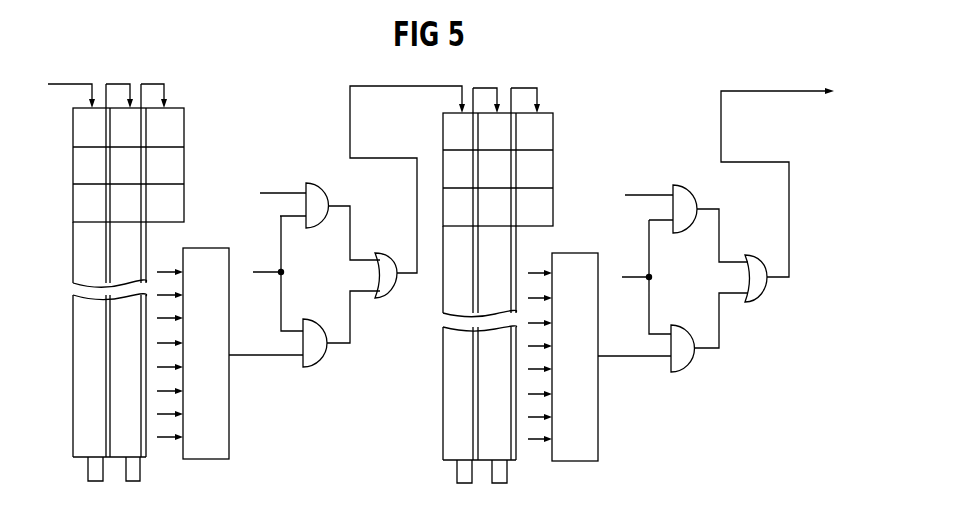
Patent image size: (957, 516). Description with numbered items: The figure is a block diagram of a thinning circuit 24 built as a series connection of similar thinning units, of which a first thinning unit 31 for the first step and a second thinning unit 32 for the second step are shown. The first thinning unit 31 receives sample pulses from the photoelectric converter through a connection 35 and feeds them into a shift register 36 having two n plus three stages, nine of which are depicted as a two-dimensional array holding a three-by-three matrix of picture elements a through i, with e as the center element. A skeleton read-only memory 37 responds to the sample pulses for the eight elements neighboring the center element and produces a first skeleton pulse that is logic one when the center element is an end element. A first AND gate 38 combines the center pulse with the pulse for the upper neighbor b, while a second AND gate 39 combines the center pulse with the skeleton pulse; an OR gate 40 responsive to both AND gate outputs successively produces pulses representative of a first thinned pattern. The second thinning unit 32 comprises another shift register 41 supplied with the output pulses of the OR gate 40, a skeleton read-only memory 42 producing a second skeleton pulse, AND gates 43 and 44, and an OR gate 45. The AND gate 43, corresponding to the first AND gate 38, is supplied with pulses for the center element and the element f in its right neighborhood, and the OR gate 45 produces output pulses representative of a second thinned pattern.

The thinning circuit 24 is at (746, 390).
The first thinning unit 31 is at (248, 125).
The second thinning unit 32 is at (631, 127).
The connection 35 is at (65, 84).
The shift register 36 is at (184, 175).
The skeleton read-only memory 37 is at (200, 248).
The first AND gate 38 is at (313, 228).
The second AND gate 39 is at (327, 362).
The OR gate 40 is at (396, 267).
The shift register 41 is at (553, 182).
The skeleton read-only memory 42 is at (563, 253).
The AND gate 43 is at (682, 233).
The AND gate 44 is at (690, 365).
The OR gate 45 is at (752, 300).